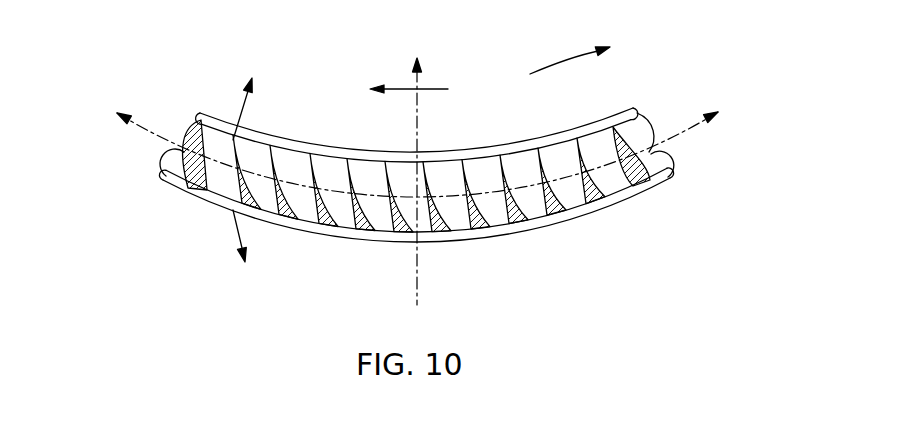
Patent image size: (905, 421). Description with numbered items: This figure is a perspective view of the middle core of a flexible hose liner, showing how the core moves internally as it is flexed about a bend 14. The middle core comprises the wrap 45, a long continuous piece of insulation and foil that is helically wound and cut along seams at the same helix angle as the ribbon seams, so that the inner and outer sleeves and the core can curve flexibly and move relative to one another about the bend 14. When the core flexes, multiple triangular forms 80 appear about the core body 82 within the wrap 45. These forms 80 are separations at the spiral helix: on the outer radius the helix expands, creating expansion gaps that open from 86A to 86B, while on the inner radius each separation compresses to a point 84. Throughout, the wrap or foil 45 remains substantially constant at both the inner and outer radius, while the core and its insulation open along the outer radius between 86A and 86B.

The bend 14 is at (415, 168).
The wrap 45 is at (402, 193).
The triangular forms 80 is at (190, 128).
The core body 82 is at (401, 198).
The point 84 is at (200, 114).
The expansion gap start 86A is at (180, 192).
The expansion gap end 86B is at (209, 203).